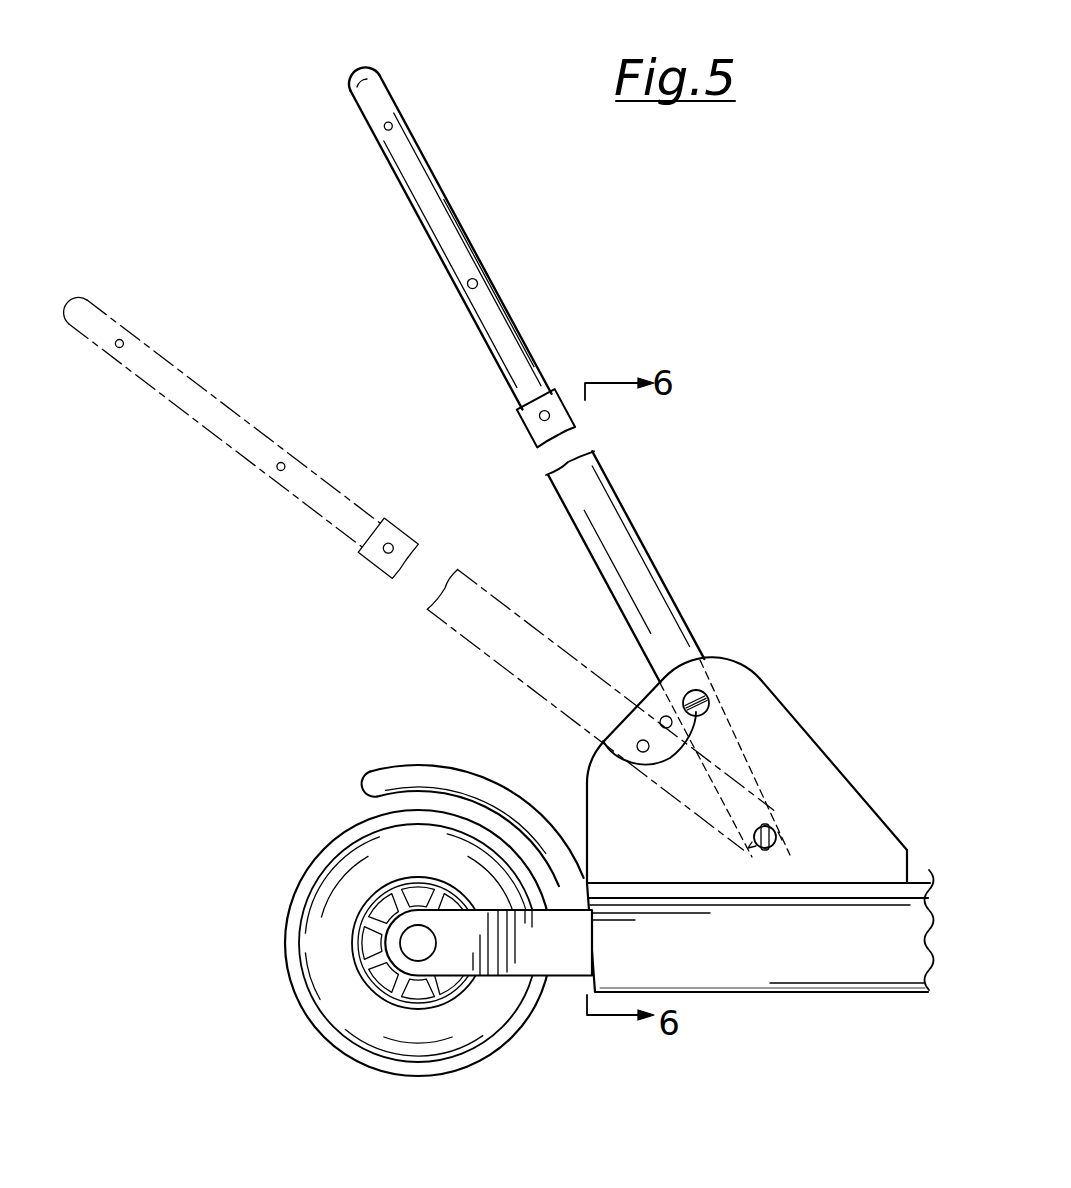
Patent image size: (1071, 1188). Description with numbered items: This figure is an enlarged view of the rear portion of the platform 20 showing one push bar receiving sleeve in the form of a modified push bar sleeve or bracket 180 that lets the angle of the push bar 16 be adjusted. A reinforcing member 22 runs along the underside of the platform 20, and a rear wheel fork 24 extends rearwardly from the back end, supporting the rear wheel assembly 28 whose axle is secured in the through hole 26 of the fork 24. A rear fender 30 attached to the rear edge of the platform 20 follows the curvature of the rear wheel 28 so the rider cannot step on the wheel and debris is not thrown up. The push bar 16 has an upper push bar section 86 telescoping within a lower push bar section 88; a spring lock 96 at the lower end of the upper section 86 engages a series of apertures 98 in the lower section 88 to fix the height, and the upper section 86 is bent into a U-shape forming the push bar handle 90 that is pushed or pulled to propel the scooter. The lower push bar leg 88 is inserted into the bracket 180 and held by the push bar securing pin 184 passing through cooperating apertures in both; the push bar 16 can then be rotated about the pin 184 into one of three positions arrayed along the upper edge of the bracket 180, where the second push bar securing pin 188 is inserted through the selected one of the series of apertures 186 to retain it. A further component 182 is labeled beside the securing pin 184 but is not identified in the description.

The push bar portion 16 is at (565, 268).
The platform 20 is at (918, 886).
The reinforcing members 22 is at (762, 1020).
The rear wheel fork 24 is at (483, 972).
The through holes 26 is at (432, 958).
The rear wheel assembly 28 is at (323, 1001).
The rear fender 30 is at (400, 776).
The upper push bar section 86 is at (432, 244).
The lower push bar section 88 is at (653, 587).
The push bar handle 90 is at (375, 70).
The spring lock 96 is at (474, 284).
The apertures 98 is at (525, 420).
The modified push bar sleeve or bracket 180 is at (800, 740).
The pivot fastener 182 is at (778, 843).
The push bar securing pin 184 is at (764, 851).
The apertures of the modified sleeve 186 is at (637, 746).
The second push bar securing pin 188 is at (711, 698).